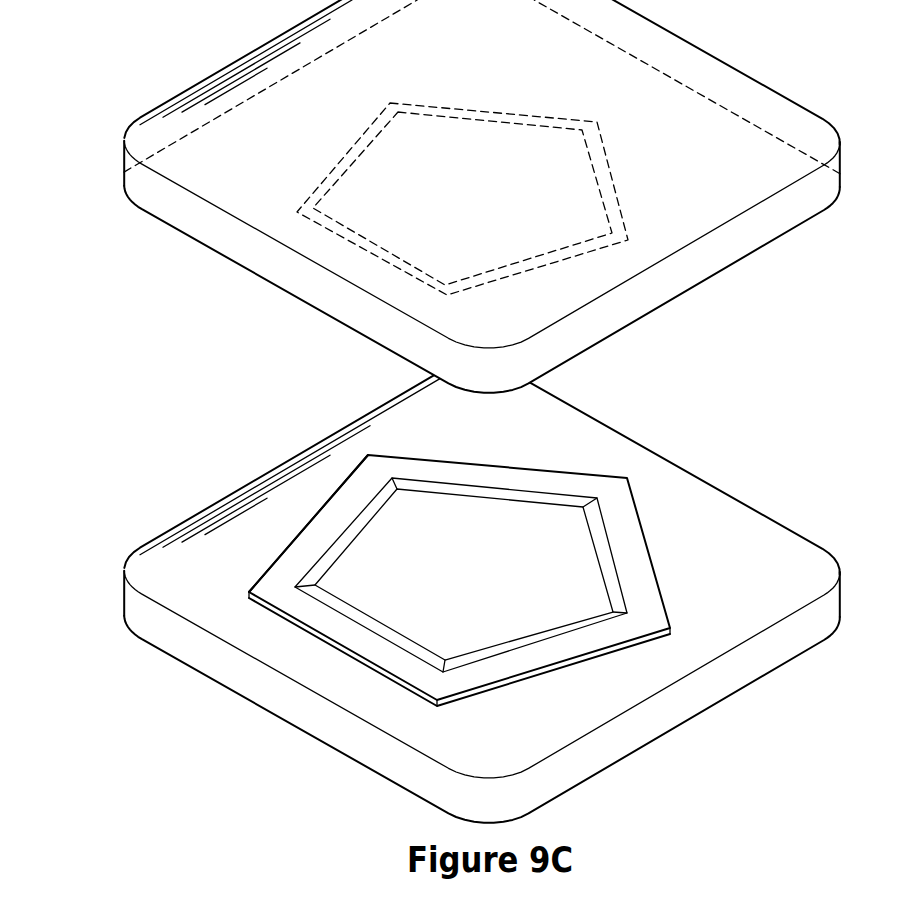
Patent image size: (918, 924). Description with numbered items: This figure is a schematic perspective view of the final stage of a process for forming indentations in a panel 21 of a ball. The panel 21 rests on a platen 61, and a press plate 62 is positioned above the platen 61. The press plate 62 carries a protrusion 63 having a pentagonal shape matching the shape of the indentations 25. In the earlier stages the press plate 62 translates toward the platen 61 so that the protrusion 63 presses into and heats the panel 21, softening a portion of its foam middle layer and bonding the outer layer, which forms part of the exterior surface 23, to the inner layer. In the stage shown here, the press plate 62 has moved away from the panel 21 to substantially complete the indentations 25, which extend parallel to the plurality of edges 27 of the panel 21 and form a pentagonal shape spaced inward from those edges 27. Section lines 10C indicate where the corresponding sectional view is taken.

The platen 61 is at (746, 505).
The press plate 62 is at (748, 79).
The protrusion 63 is at (497, 112).
The panel 21 is at (512, 462).
The exterior surface 23 is at (657, 613).
The indentations 25 is at (417, 485).
The edges 27 is at (287, 548).
The section line 10C is at (557, 530).